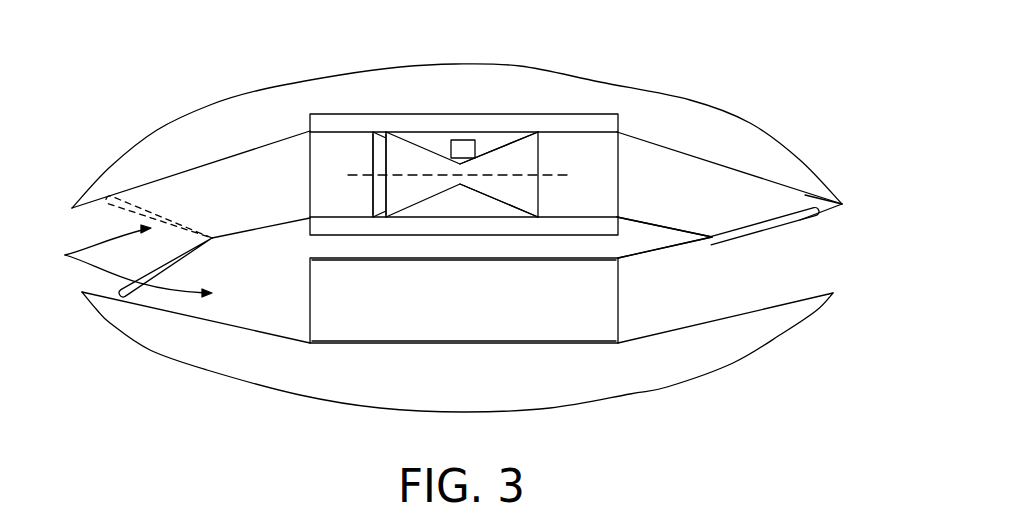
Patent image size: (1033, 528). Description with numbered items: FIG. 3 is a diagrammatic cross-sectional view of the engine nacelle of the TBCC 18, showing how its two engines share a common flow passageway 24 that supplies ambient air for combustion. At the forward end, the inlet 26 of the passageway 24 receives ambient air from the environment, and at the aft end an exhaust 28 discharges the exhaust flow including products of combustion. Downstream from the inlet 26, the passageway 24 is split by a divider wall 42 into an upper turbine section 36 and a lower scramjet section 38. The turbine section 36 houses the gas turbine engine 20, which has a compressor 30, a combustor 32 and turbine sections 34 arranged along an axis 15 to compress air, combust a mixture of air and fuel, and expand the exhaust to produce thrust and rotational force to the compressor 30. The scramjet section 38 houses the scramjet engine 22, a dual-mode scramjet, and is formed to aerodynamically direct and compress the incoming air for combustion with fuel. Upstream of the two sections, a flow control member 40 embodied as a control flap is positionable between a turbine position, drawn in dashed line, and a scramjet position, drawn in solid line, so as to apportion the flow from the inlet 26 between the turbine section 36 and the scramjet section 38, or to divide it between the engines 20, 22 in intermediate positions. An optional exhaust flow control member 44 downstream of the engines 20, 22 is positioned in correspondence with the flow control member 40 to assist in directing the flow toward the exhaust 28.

The axis 15 is at (358, 176).
The TBCC 18 is at (595, 101).
The gas turbine engine 20 is at (516, 162).
The scramjet engine 22 is at (453, 341).
The flow passageway 24 is at (228, 320).
The inlet 26 is at (71, 284).
The exhaust 28 is at (826, 264).
The compressor 30 is at (397, 140).
The combustor 32 is at (462, 139).
The turbine sections 34 is at (516, 148).
The turbine section 36 is at (344, 157).
The scramjet section 38 is at (354, 321).
The flow control member 40 is at (175, 213).
The divider wall 42 is at (638, 227).
The exhaust flow control member 44 is at (781, 222).